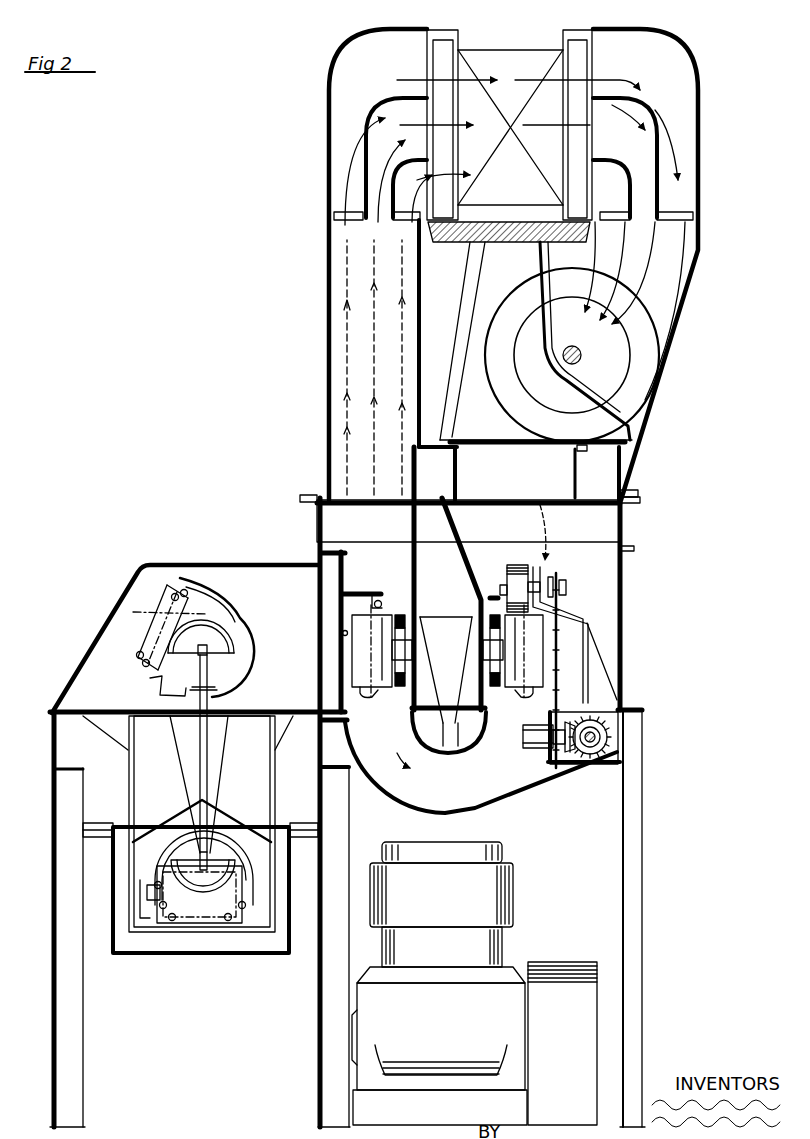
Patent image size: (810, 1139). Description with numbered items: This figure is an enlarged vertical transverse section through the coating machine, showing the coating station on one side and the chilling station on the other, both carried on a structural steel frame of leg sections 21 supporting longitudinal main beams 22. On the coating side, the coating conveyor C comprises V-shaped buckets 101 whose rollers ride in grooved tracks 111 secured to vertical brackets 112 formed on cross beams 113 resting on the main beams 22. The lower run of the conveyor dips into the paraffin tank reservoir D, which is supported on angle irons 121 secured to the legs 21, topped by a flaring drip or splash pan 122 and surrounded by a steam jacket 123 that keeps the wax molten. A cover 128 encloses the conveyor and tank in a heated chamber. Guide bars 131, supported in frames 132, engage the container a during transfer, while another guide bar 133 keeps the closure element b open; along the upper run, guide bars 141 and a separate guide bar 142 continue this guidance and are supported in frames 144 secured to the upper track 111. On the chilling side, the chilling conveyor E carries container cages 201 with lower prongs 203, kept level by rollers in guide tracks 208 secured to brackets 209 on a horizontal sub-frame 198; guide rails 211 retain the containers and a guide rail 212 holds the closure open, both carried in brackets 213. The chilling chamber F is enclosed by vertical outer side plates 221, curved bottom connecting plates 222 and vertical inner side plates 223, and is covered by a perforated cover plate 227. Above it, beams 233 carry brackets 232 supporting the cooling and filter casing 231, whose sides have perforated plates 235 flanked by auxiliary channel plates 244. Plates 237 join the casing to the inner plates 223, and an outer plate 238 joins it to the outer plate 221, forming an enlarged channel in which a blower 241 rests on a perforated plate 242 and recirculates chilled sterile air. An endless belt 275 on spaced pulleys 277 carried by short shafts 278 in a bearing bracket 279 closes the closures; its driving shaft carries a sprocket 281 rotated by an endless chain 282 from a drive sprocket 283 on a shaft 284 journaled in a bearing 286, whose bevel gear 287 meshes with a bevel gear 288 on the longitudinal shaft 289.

The cooling and filter casing 231 is at (508, 75).
The perforated plates 235 is at (430, 80).
The auxiliary channel plates 244 is at (407, 160).
The plates 237 is at (328, 292).
The brackets 232 is at (547, 290).
The outer plate 238 is at (696, 278).
The blower 241 is at (613, 339).
The perforated cover plate 227 is at (352, 496).
The beams 233 is at (458, 474).
The perforated plate 242 is at (538, 500).
The chilling chamber F is at (586, 521).
The vertical inner side plates 223 is at (413, 556).
The brackets 213 is at (360, 589).
The guide rail 212 is at (379, 598).
The vertical outer side plates 221 is at (477, 568).
The endless belt 275 is at (516, 572).
The sprocket 281 is at (553, 586).
The short shafts 278 is at (548, 600).
The spaced pulleys 277 is at (505, 596).
The guide rails 211 is at (550, 626).
The brackets 209 is at (418, 690).
The guide tracks 208 is at (493, 672).
The container cages 201 is at (388, 654).
The bearing bracket 279 is at (592, 665).
The chilling conveyor E is at (558, 676).
The lower prongs 203 is at (371, 692).
The horizontal structural iron sub-frame 198 is at (457, 731).
The curved bottom connecting plates 222 is at (470, 766).
The endless chain 282 is at (555, 690).
The shaft 284 is at (545, 703).
The drive sprocket 283 is at (570, 748).
The bearing 286 is at (540, 736).
The bevel gear 287 is at (572, 753).
The bevel gear 288 is at (578, 751).
The shaft 289 is at (598, 739).
The main beams 22 is at (612, 767).
The leg sections 21 is at (633, 822).
The guide bars 141 is at (174, 592).
The frames 144 is at (207, 602).
The coating conveyor C is at (207, 632).
The cover 128 is at (108, 615).
The V-shaped buckets 101 is at (220, 645).
The grooved tracks 111 is at (206, 670).
The vertical brackets 112 is at (213, 702).
The cross beams 113 is at (115, 714).
The guide bar 142 is at (149, 693).
The drip or splash pan 122 is at (131, 782).
The angle irons 121 is at (87, 832).
The guide bar 133 is at (157, 885).
The frames 132 is at (158, 907).
The guide bars 131 is at (240, 909).
The steam jacket 123 is at (140, 956).
The tank reservoir D is at (257, 933).
The container a is at (562, 647).
The closure element b is at (380, 607).